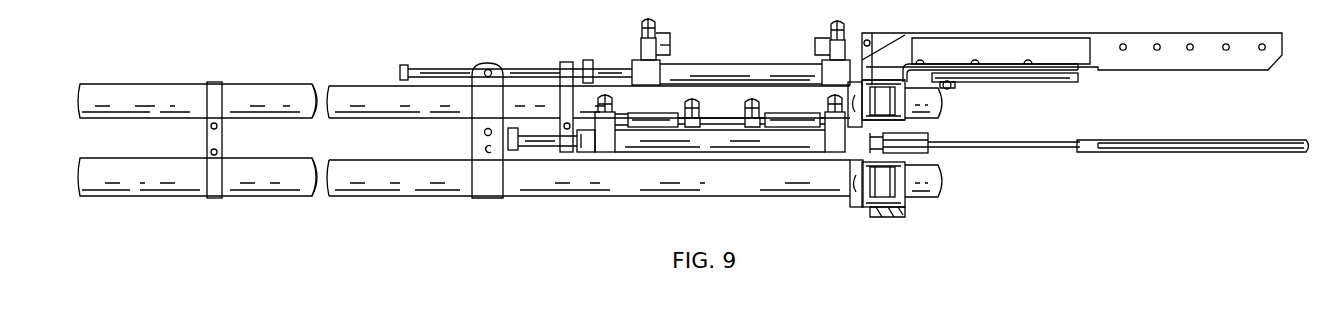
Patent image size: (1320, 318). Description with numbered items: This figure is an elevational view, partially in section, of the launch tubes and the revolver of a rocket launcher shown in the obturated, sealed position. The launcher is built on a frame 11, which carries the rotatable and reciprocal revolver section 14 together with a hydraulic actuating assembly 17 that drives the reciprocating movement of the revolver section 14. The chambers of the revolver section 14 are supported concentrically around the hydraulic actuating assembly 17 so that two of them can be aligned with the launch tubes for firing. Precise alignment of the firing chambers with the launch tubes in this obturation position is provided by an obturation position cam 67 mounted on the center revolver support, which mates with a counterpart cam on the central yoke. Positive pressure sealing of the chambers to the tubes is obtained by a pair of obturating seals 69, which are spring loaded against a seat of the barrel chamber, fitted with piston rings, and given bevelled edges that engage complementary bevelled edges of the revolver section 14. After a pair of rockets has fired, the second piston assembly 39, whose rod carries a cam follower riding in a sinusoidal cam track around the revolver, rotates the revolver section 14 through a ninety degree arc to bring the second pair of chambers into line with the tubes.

The frame 11 is at (905, 47).
The revolver section 14 is at (362, 96).
The hydraulic actuating assembly 17 is at (714, 119).
The second piston assembly 39 is at (773, 59).
The obturation position cam 67 is at (912, 196).
The obturating seals 69 is at (888, 212).